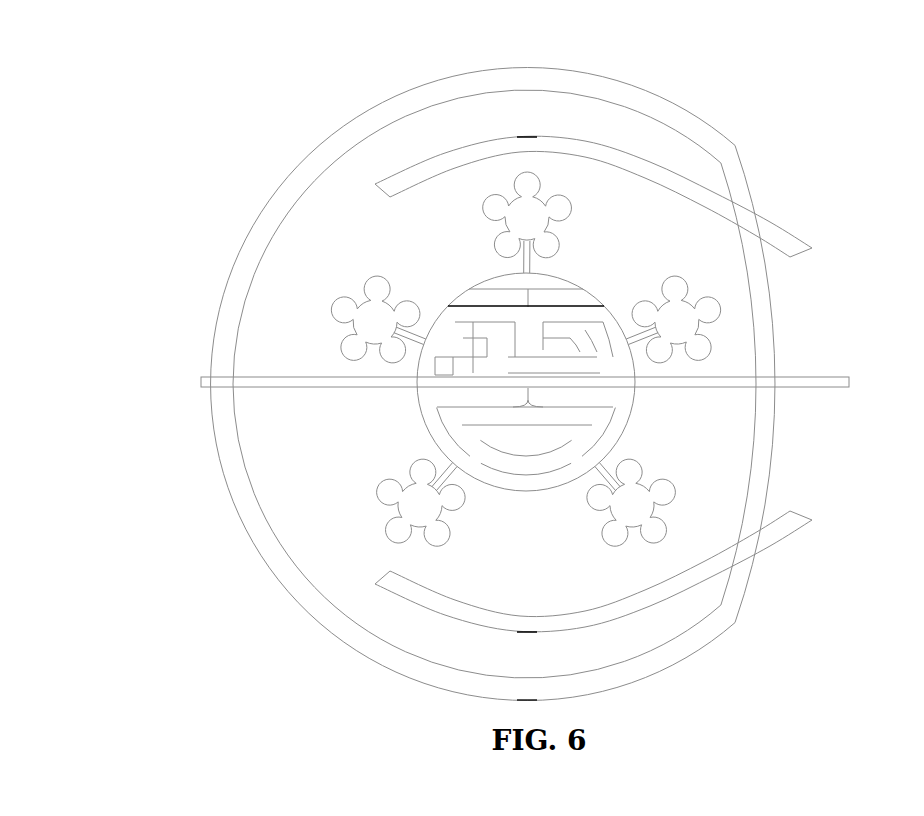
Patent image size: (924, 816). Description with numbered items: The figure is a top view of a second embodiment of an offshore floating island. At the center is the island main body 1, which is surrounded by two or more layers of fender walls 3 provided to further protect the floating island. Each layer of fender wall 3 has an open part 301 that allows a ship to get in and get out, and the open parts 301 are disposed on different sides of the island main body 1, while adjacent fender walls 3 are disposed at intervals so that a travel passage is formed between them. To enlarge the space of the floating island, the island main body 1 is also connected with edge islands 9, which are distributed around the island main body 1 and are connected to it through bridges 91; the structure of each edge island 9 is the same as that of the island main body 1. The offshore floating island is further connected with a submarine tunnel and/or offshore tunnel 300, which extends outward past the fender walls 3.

The island main body 1 is at (597, 288).
The fender wall 3 is at (694, 106).
The edge island 9 is at (550, 231).
The bridge 91 is at (520, 263).
The submarine tunnel or offshore tunnel 300 is at (848, 389).
The open part 301 is at (288, 318).